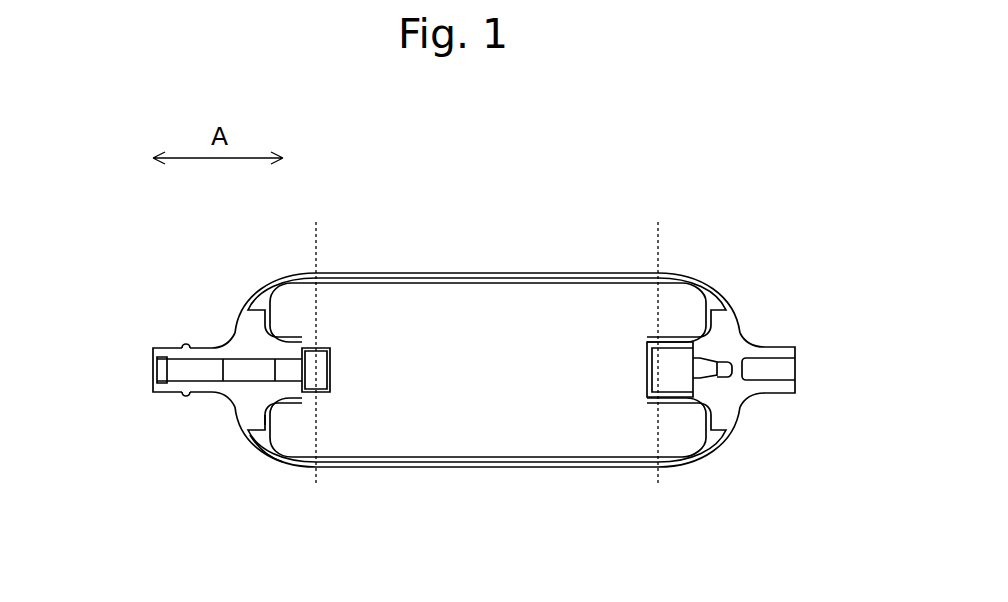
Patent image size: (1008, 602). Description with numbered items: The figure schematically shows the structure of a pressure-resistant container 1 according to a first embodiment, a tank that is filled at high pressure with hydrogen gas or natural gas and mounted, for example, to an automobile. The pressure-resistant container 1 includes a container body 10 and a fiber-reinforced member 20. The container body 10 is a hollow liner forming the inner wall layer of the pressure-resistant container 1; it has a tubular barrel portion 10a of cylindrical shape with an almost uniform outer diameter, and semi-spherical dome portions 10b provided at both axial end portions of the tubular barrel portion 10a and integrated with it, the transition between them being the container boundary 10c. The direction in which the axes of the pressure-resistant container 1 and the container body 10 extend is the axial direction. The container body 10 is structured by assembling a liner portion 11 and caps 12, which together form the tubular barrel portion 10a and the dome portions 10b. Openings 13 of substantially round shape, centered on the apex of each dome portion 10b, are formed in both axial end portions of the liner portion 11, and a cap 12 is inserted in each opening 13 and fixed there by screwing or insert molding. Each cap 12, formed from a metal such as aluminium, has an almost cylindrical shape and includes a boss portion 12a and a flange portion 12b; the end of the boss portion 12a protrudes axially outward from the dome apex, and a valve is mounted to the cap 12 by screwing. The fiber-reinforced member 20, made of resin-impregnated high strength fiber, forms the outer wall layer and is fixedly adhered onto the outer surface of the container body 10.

The pressure-resistant container 1 is at (710, 223).
The container body 10 is at (828, 532).
The tubular barrel portion 10a is at (658, 222).
The dome portion 10b is at (258, 283).
The container boundary 10c is at (316, 218).
The liner portion 11 is at (705, 458).
The cap 12 is at (730, 407).
The boss portion 12a is at (185, 346).
The flange portion 12b is at (253, 417).
The opening 13 is at (327, 363).
The fiber-reinforced member 20 is at (267, 452).